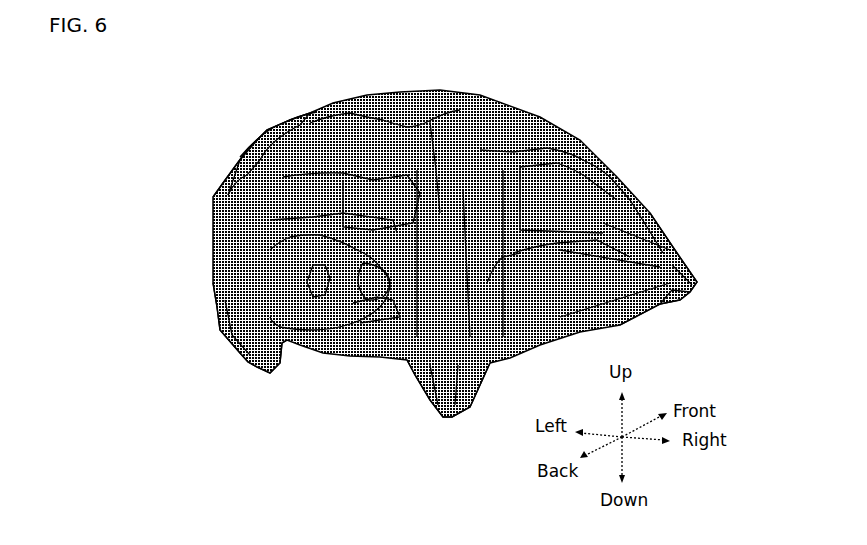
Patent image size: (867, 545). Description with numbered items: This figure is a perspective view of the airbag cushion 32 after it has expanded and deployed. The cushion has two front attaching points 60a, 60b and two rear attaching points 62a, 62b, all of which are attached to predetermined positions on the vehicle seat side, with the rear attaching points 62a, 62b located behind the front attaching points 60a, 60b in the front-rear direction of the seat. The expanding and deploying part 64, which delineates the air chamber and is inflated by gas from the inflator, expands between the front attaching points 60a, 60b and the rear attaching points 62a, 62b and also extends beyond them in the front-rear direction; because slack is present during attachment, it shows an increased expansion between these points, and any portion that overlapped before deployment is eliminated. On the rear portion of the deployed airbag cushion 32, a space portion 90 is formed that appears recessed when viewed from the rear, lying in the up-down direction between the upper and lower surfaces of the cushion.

The airbag cushion 32 is at (577, 133).
The expanding and deploying part 64 is at (297, 118).
The space portion 90 is at (333, 355).
The rear attaching point 62a is at (447, 412).
The rear attaching point 62b is at (260, 370).
The front attaching point 60a is at (700, 278).
The front attaching point 60b is at (719, 269).